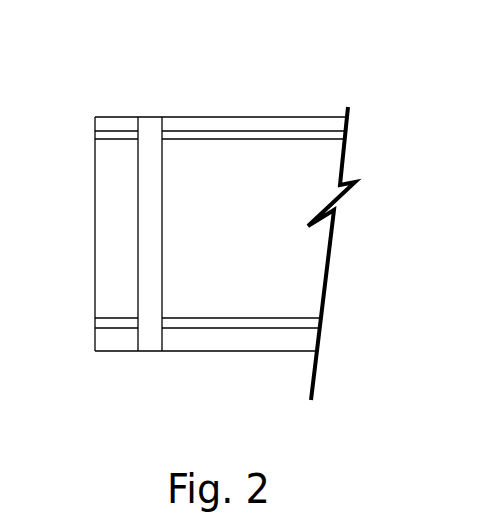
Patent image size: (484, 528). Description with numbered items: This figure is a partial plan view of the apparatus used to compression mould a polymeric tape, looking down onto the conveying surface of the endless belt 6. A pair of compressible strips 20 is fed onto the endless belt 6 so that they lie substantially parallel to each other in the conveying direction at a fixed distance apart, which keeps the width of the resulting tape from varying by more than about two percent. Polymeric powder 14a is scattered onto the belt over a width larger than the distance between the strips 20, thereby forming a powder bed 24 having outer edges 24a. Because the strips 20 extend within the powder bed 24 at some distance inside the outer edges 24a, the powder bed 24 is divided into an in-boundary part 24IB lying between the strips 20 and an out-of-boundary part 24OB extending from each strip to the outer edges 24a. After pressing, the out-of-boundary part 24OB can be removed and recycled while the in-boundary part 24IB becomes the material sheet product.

The endless belt 6 is at (122, 236).
The polymeric powder 14a is at (150, 117).
The compressible strips 20 is at (117, 132).
The powder bed 24 is at (293, 273).
The outer edges 24a is at (250, 117).
The out-of-boundary part 24OB is at (290, 117).
The in-boundary part 24IB is at (258, 252).